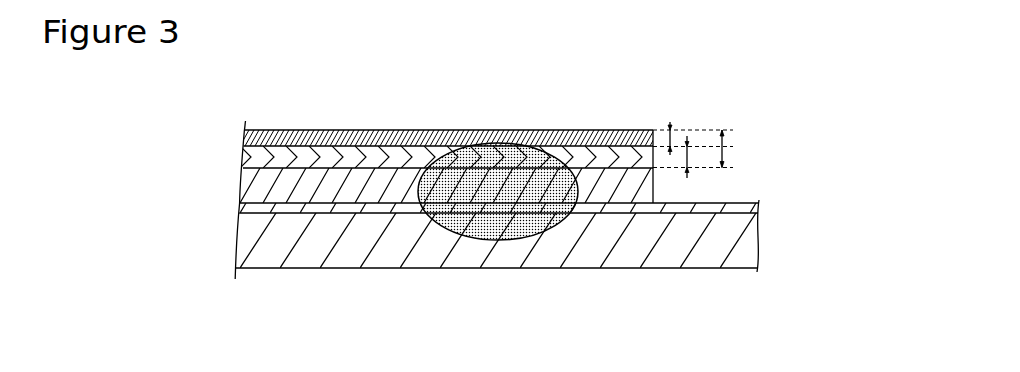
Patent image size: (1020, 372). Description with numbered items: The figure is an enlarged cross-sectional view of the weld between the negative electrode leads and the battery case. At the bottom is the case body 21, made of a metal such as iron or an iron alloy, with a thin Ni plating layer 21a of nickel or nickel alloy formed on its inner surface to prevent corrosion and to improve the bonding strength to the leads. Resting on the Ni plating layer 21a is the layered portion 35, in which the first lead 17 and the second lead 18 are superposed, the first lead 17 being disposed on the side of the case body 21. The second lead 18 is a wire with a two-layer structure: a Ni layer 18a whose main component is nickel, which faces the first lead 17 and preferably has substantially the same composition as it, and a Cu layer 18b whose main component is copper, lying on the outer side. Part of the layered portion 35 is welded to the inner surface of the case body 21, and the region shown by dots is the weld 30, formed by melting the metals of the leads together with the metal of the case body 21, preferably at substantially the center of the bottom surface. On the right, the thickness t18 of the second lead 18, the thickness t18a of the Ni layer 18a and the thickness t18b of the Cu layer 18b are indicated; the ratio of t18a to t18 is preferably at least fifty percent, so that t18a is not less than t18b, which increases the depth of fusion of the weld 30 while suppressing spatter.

The first lead 17 is at (240, 186).
The second lead 18 is at (387, 145).
The Ni layer 18a is at (240, 158).
The Cu layer 18b is at (240, 138).
The case body 21 is at (541, 258).
The Ni plating layer 21a is at (240, 208).
The weld 30 is at (503, 145).
The layered portion 35 is at (401, 131).
The thickness of the second lead t18 is at (725, 150).
The thickness of the Ni layer t18a is at (690, 147).
The thickness of the Cu layer t18b is at (668, 128).